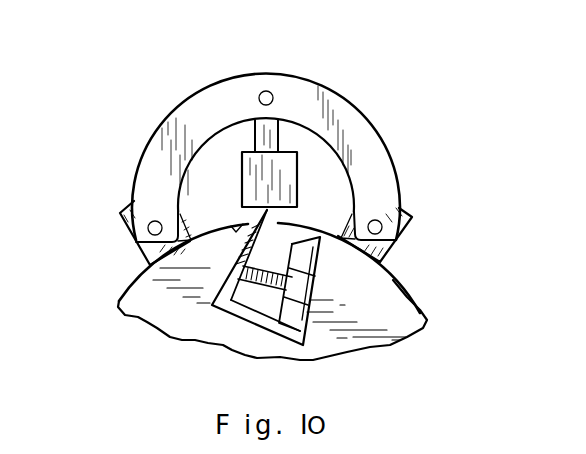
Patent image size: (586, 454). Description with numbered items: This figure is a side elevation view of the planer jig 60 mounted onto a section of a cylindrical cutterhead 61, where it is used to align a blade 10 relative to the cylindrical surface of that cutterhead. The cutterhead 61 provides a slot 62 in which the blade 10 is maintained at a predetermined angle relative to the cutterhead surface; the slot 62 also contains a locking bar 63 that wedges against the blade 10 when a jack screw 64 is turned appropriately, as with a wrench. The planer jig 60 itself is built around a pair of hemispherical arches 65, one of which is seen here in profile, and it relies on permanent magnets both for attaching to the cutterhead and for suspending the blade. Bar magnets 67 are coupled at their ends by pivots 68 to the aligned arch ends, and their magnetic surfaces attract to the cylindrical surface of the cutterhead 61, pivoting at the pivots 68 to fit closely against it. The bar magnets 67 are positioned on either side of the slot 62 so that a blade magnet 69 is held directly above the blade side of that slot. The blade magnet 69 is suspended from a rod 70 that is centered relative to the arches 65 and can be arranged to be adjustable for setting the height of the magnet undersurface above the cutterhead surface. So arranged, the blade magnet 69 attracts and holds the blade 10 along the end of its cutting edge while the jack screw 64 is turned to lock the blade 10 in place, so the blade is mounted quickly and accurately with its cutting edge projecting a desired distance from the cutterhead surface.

The blade 10 is at (252, 225).
The planer jig 60 is at (153, 115).
The cutterhead 61 is at (379, 312).
The slot 62 is at (316, 282).
The locking bar 63 is at (253, 296).
The jack screw 64 is at (265, 293).
The hemispherical arch 65 is at (302, 92).
The bar magnet 67 is at (127, 227).
The pivot 68 is at (152, 232).
The blade magnet 69 is at (283, 166).
The rod 70 is at (262, 137).